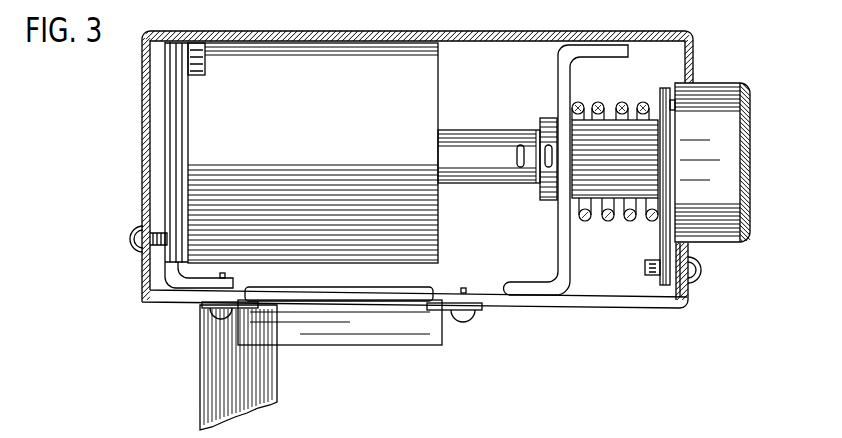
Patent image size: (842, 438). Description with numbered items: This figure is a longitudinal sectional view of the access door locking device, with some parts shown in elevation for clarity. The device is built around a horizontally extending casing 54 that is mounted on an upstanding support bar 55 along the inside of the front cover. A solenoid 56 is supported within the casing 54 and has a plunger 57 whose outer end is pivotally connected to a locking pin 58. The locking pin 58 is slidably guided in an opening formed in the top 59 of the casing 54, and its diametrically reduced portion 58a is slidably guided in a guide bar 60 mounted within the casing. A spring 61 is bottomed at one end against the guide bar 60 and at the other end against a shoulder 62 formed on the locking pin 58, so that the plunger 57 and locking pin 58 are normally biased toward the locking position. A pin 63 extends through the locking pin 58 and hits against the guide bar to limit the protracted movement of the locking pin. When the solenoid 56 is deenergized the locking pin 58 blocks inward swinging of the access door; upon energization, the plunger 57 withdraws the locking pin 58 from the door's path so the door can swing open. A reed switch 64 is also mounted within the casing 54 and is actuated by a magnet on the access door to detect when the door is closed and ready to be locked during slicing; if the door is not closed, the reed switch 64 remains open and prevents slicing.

The casing 54 is at (635, 32).
The support bar 55 is at (273, 386).
The solenoid 56 is at (212, 132).
The plunger 57 is at (500, 173).
The locking pin 58 is at (750, 198).
The diametrically reduced portion 58a is at (608, 137).
The top of the casing 59 is at (690, 84).
The guide bar 60 is at (563, 233).
The spring 61 is at (632, 228).
The shoulder 62 is at (672, 97).
The pin 63 is at (538, 132).
The reed switch 64 is at (681, 196).